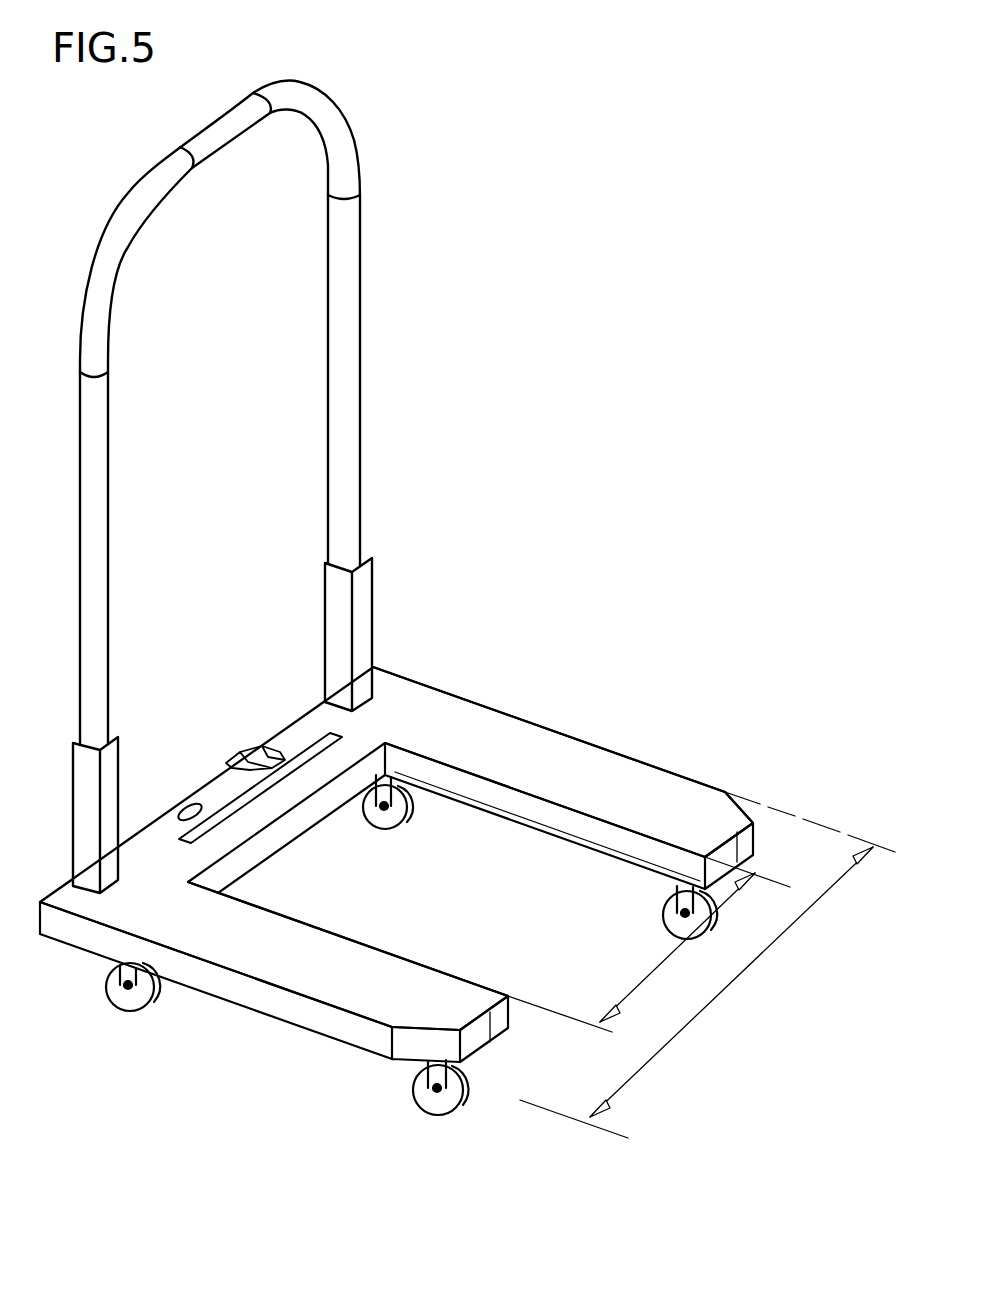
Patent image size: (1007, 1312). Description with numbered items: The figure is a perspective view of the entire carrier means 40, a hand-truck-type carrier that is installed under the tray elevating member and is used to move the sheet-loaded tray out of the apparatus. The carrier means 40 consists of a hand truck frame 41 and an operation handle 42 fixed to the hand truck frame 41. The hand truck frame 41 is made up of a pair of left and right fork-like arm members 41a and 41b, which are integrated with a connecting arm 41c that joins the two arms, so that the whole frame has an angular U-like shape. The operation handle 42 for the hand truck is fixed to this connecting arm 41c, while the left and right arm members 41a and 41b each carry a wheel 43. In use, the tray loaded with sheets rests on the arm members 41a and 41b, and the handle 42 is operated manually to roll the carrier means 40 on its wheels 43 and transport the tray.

The carrier means 40 is at (435, 473).
The hand truck frame 41 is at (433, 686).
The arm member 41a is at (582, 762).
The arm member 41b is at (350, 952).
The connecting arm 41c is at (292, 740).
The operation handle 42 is at (102, 540).
The wheel 43 is at (415, 818).